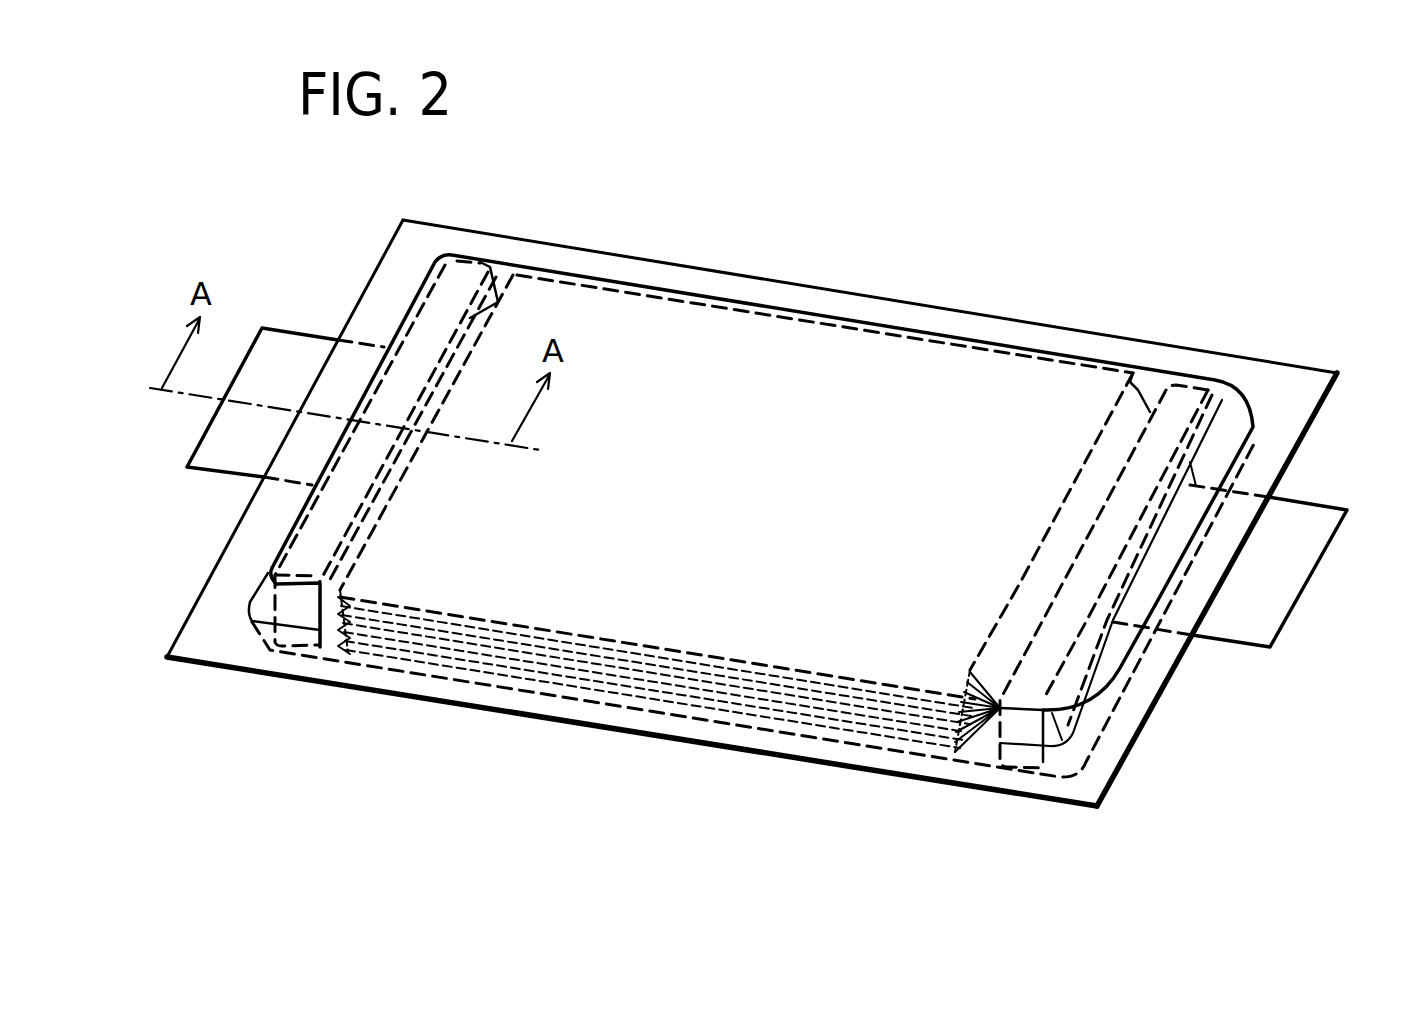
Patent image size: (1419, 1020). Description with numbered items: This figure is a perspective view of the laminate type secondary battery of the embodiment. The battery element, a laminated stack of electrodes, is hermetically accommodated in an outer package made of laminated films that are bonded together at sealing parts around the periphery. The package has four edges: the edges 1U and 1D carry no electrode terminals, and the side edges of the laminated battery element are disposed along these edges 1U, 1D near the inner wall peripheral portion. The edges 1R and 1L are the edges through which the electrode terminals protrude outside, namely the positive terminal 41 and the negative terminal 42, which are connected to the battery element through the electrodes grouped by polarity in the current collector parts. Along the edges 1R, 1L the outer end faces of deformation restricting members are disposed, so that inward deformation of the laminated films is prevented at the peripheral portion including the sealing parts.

The edge 1U is at (822, 285).
The edge 1L is at (227, 537).
The edge 1R is at (1180, 683).
The edge 1D is at (572, 727).
The positive terminal 41 is at (1307, 513).
The negative terminal 42 is at (286, 345).